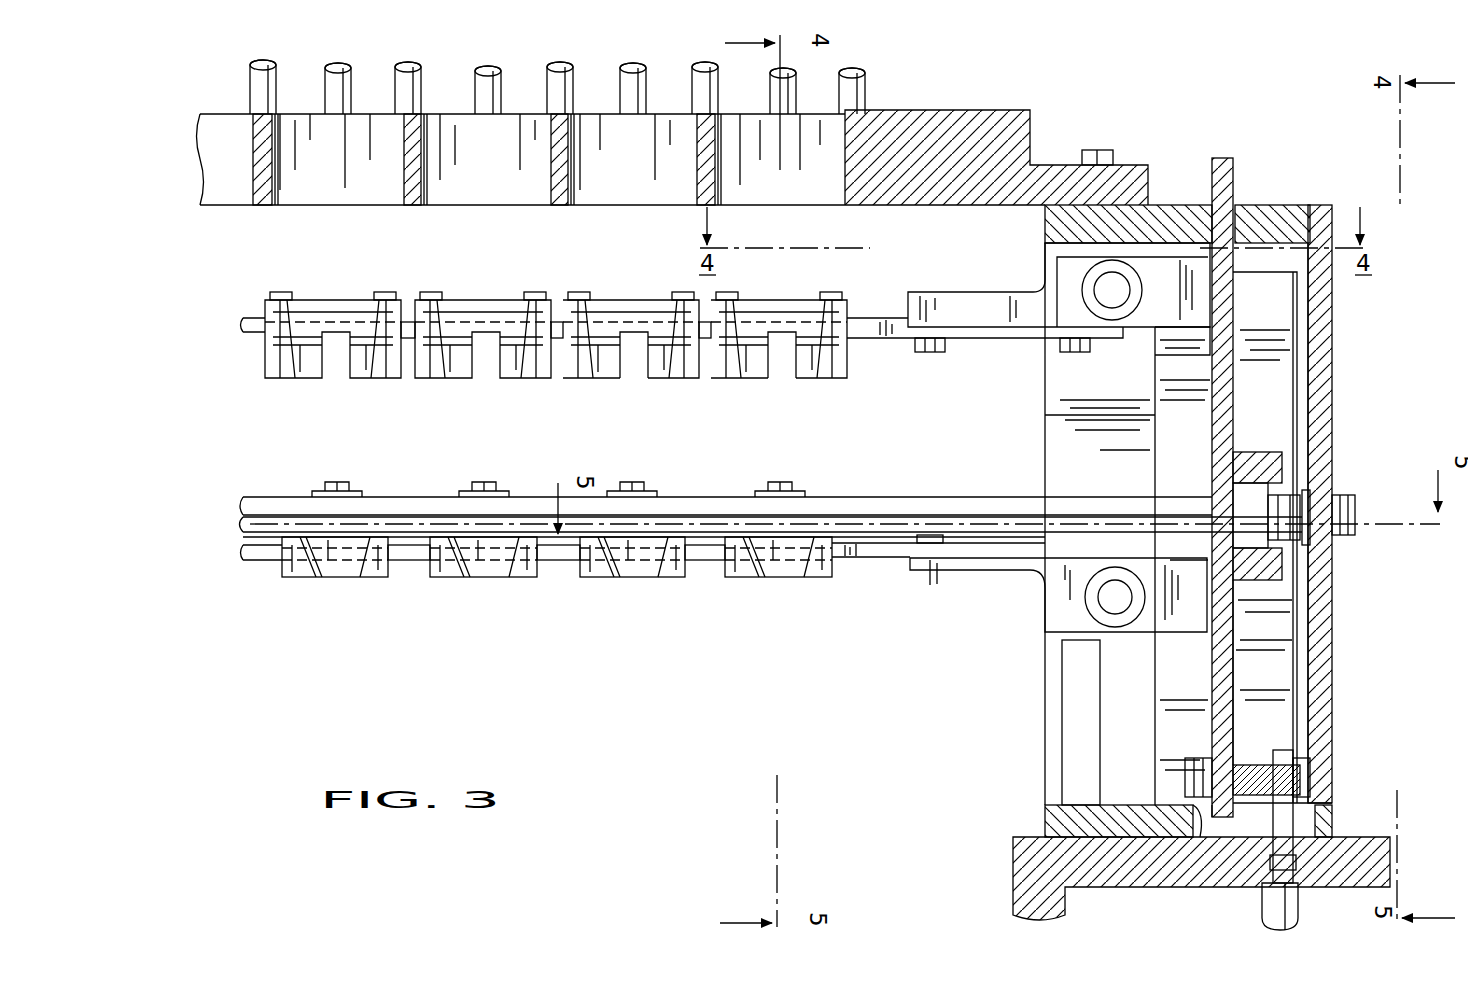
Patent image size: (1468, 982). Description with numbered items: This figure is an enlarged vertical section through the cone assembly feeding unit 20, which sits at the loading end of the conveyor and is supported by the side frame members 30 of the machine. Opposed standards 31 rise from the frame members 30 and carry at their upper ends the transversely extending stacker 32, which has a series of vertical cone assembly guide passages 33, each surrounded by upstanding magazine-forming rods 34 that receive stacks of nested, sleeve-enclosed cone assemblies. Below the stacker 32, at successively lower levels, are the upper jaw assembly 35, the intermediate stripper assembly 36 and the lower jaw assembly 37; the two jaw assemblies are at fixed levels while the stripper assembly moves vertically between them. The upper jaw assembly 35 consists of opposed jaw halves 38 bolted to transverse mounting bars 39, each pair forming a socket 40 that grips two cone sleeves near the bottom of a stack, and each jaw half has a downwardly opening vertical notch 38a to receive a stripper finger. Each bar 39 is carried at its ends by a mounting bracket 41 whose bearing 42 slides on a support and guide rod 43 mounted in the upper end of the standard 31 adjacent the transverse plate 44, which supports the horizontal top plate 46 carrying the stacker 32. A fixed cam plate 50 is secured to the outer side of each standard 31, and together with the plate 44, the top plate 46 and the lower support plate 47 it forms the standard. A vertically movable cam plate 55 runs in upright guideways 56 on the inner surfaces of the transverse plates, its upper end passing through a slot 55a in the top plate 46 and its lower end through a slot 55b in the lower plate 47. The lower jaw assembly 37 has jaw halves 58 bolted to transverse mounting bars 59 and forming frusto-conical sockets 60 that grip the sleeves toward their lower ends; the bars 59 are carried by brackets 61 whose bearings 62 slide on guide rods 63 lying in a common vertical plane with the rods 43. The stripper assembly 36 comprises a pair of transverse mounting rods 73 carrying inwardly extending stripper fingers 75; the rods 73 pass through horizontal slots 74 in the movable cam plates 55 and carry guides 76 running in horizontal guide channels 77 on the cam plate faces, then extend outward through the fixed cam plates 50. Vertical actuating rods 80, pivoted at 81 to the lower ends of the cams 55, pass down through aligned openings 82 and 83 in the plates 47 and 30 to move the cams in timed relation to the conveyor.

The unit 20 is at (1137, 148).
The side frame members 30 is at (1025, 872).
The standards 31 is at (1335, 330).
The stacker 32 is at (963, 102).
The cone assembly guide passages 33 is at (380, 196).
The magazine-forming rods 34 is at (480, 74).
The upper jaw assembly 35 is at (566, 346).
The intermediate stripper assembly 36 is at (840, 487).
The lower jaw assembly 37 is at (724, 598).
The jaw halves 38 is at (514, 362).
The vertical notch 38a is at (338, 362).
The mounting bars 39 is at (893, 331).
The socket 40 is at (747, 367).
The mounting bracket 41 is at (967, 298).
The bearing 42 is at (1087, 282).
The support and guide rod 43 is at (1105, 296).
The forward transverse plate 44 is at (1100, 480).
The top plate 46 is at (1292, 210).
The lower support plate 47 is at (1045, 820).
The cam plate 50 is at (1325, 390).
The cam plate 55 is at (1233, 344).
The slot 55a is at (1251, 216).
The slot 55b is at (1202, 822).
The guideways 56 is at (1277, 670).
The jaw halves 58 is at (300, 566).
The mounting bars 59 is at (405, 554).
The socket 60 is at (490, 566).
The brackets 61 is at (965, 575).
The bearings 62 is at (1095, 612).
The guide rods 63 is at (1103, 597).
The mounting rods 73 is at (718, 497).
The horizontal slots 74 is at (1212, 512).
The stripper fingers 75 is at (648, 497).
The guides 76 is at (1252, 488).
The horizontal guide channels 77 is at (1254, 568).
The actuating rods 80 is at (1268, 908).
The pivot 81 is at (1256, 762).
The opening 82 is at (1305, 822).
The opening 83 is at (1305, 857).